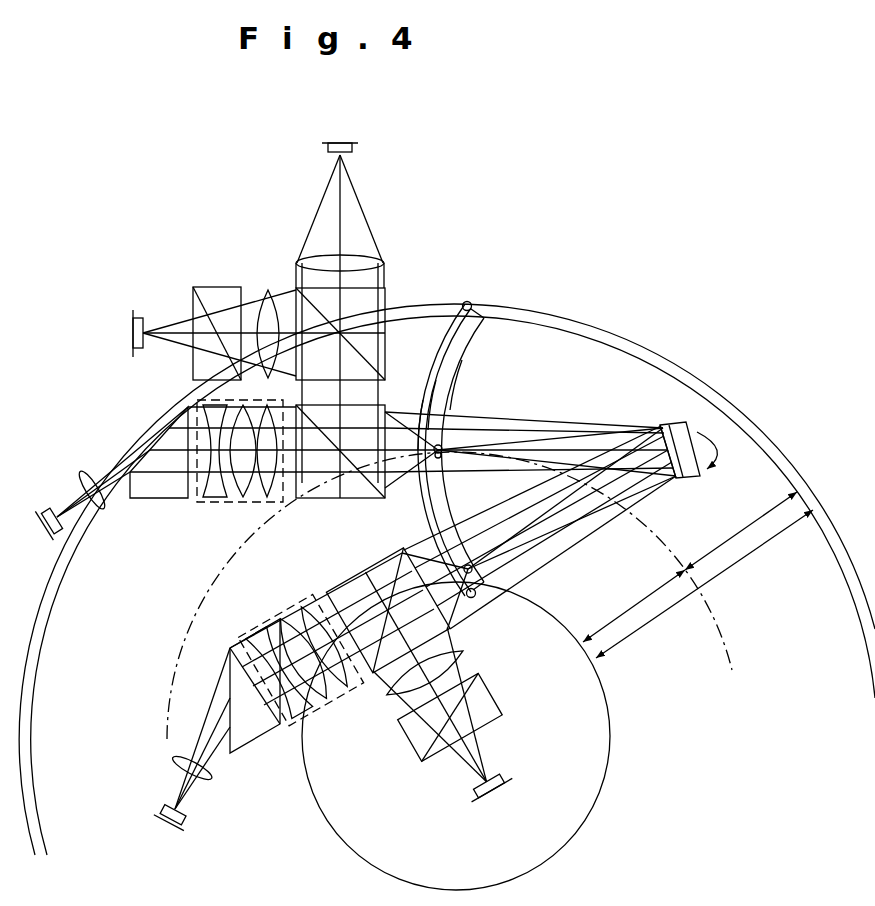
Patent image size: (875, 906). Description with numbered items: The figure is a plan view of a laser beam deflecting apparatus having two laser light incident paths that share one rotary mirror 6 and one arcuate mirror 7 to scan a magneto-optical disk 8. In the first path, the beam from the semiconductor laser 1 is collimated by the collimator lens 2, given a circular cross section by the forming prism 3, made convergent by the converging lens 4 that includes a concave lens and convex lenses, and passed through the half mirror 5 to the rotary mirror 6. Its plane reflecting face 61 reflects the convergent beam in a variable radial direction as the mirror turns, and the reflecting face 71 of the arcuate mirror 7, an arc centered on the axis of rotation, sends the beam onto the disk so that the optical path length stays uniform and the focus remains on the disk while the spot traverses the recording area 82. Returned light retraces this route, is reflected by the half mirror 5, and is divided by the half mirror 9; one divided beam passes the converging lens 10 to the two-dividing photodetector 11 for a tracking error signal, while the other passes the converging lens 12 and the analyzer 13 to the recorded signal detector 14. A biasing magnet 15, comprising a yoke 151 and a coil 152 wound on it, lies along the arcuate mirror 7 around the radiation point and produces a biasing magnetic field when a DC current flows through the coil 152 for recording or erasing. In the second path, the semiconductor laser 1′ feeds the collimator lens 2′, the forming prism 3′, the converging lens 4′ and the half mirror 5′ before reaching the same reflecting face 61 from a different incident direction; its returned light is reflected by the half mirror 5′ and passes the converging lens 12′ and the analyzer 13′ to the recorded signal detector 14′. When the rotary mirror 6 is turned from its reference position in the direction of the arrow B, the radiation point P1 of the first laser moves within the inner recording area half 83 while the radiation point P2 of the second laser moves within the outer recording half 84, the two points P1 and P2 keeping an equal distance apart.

The semiconductor laser 1 is at (76, 546).
The collimator lens 2 is at (106, 512).
The forming prism 3 is at (162, 498).
The converging lens 4 is at (233, 500).
The half mirror 5 is at (386, 407).
The rotary mirror 6 is at (688, 420).
The plane reflecting face 61 is at (653, 415).
The arcuate mirror 7 is at (474, 362).
The reflecting face of the arcuate mirror 71 is at (462, 393).
The magneto-optical disk 8 is at (670, 360).
The recording area 82 is at (704, 584).
The recording area half 83 is at (634, 606).
The recording half 84 is at (741, 531).
The half mirror 9 is at (386, 302).
The converging lens 10 is at (380, 258).
The two-dividing photodetector 11 is at (353, 148).
The converging lens 12 is at (267, 293).
The analyzer 13 is at (207, 293).
The recorded signal detector 14 is at (143, 325).
The biasing magnet 15 is at (420, 393).
The yoke 151 is at (449, 353).
The coil 152 is at (432, 373).
The radiation point P1 is at (474, 570).
The radiation point P2 is at (444, 447).
The arrow B is at (715, 450).
The semiconductor laser 1′ is at (184, 826).
The collimator lens 2′ is at (212, 772).
The forming prism 3′ is at (261, 730).
The converging lens 4′ is at (339, 700).
The half mirror 5′ is at (442, 628).
The converging lens 12′ is at (453, 657).
The analyzer 13′ is at (481, 700).
The recorded signal detector 14′ is at (498, 773).